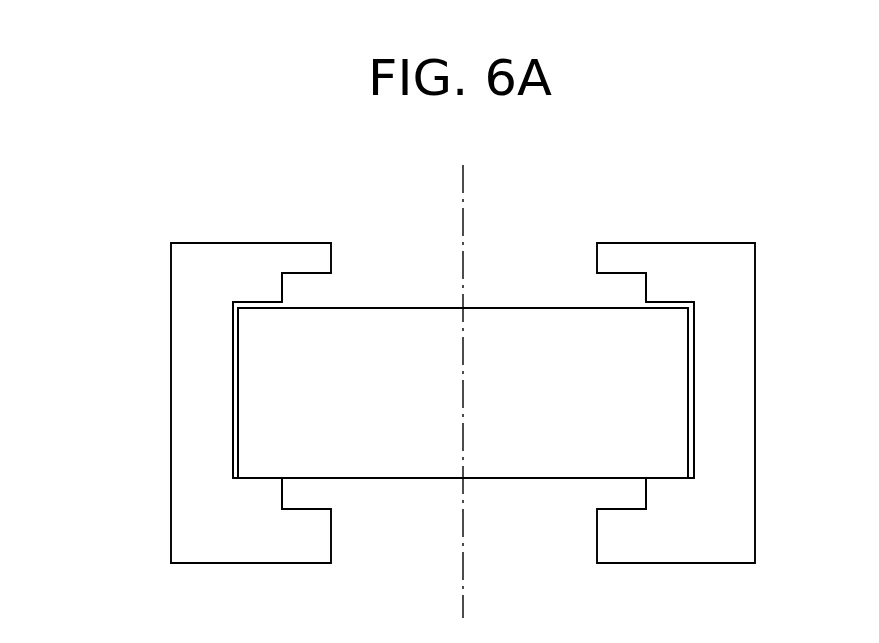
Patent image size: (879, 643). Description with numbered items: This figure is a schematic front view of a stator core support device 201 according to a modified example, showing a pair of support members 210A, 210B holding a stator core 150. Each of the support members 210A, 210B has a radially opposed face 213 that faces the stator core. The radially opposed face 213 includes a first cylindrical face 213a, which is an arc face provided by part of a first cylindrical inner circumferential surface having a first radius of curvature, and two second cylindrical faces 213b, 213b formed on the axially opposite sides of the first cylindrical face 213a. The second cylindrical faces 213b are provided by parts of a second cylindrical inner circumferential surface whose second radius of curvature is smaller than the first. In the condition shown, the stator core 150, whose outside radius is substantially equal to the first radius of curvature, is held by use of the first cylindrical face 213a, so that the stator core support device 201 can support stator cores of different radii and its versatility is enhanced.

The stator core support device 201 is at (666, 221).
The support member 210A is at (190, 412).
The support member 210B is at (738, 398).
The radially opposed face 213 is at (238, 440).
The first cylindrical face 213a is at (238, 393).
The second cylindrical face 213b is at (284, 289).
The stator core 150 is at (528, 443).